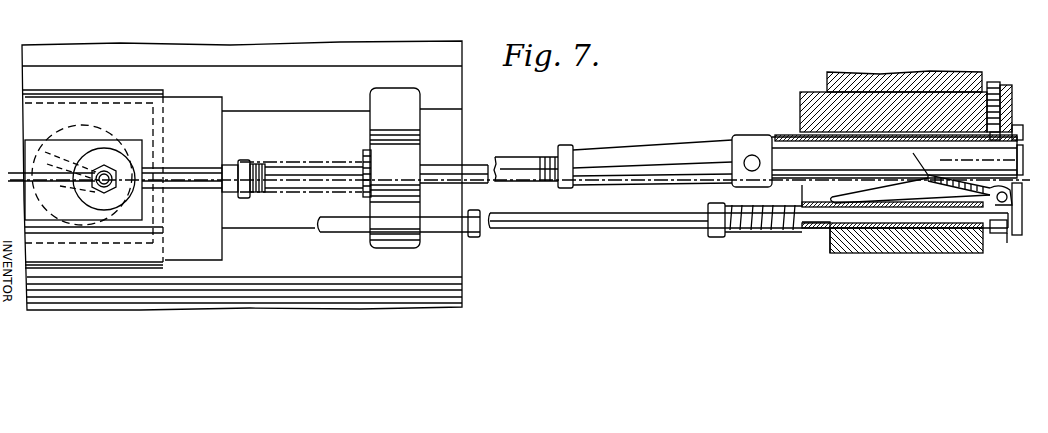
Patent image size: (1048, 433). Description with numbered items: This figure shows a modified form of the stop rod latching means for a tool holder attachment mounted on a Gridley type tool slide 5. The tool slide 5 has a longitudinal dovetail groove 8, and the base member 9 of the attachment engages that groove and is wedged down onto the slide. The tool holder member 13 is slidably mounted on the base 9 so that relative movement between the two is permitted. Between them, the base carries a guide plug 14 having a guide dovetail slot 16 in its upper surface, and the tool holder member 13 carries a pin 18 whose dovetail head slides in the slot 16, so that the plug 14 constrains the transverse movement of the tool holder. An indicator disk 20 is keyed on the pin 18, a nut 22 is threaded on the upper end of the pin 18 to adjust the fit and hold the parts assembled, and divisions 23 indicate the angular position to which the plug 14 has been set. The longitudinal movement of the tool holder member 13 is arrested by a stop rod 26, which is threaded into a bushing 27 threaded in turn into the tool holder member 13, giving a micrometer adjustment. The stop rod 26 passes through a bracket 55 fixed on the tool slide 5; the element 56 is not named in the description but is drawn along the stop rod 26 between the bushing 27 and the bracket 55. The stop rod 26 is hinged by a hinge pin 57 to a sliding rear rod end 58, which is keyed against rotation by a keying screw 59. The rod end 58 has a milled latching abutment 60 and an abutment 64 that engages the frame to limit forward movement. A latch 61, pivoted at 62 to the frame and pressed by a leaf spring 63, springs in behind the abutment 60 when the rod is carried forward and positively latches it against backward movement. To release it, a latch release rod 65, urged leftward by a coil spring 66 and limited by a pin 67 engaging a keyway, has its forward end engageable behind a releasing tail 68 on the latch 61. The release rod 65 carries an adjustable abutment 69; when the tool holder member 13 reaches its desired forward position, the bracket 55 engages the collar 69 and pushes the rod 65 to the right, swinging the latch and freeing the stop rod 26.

The tool slide 5 is at (350, 48).
The dovetail groove 8 is at (278, 113).
The base member 9 is at (86, 93).
The tool holder member 13 is at (210, 100).
The guide plug 14 is at (104, 128).
The guide dovetail slot 16 is at (52, 136).
The pin 18 is at (86, 190).
The indicator disk 20 is at (108, 151).
The nut 22 is at (120, 194).
The divisions 23 is at (132, 172).
The stop rod 26 is at (487, 165).
The bushing 27 is at (247, 198).
The bracket 55 is at (373, 141).
The shaft 56 is at (320, 161).
The hinge pin 57 is at (750, 153).
The rear rod end 58 is at (798, 148).
The keying screw 59 is at (995, 82).
The latching abutment 60 is at (912, 167).
The latch 61 is at (970, 178).
The pivot 62 is at (977, 207).
The leaf spring 63 is at (887, 192).
The abutment 64 is at (1023, 216).
The latch release rod 65 is at (560, 227).
The coil spring 66 is at (749, 233).
The pin 67 is at (988, 228).
The releasing tail 68 is at (1007, 244).
The abutment 69 is at (479, 213).